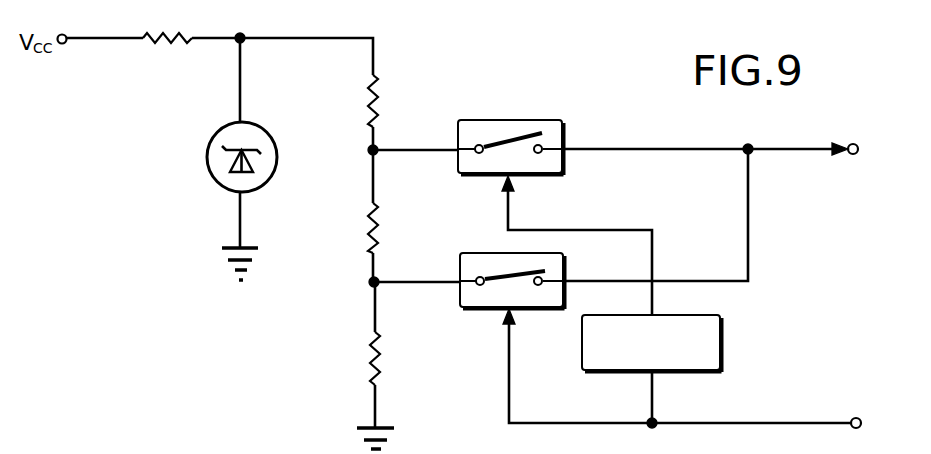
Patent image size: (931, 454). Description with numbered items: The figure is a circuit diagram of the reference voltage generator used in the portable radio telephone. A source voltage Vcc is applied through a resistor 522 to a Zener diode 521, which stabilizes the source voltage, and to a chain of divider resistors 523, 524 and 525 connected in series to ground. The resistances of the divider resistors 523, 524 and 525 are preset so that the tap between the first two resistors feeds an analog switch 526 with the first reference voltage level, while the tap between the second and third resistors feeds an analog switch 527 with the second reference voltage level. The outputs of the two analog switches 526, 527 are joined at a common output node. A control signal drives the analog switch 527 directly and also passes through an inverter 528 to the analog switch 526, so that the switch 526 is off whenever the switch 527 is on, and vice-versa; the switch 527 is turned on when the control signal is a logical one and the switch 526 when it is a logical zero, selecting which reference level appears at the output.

The Zener diode 521 is at (218, 185).
The resistor 522 is at (174, 46).
The divider resistor 523 is at (378, 97).
The divider resistor 524 is at (373, 211).
The divider resistor 525 is at (375, 355).
The analog switch 526 is at (545, 118).
The analog switch 527 is at (485, 309).
The inverter 528 is at (722, 341).